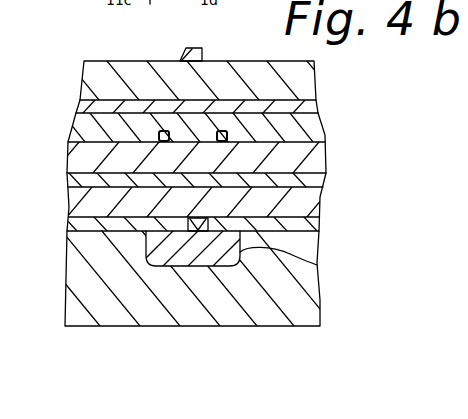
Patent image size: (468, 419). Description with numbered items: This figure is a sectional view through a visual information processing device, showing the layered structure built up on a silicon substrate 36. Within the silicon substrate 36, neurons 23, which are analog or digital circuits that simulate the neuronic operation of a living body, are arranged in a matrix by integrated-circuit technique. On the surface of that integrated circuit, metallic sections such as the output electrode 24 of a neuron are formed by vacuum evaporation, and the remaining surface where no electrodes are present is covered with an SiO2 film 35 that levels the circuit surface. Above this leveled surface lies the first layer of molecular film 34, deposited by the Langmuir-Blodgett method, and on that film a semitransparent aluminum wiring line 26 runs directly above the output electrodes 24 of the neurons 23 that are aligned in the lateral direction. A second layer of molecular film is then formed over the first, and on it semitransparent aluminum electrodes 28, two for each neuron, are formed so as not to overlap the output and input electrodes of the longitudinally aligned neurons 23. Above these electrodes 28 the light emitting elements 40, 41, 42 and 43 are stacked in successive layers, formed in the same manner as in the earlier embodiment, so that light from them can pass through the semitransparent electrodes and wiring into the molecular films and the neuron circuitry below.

The light emitting element 42 is at (315, 80).
The light emitting element 41 is at (316, 110).
The light emitting element 40 is at (325, 132).
The semitransparent aluminum electrode 28 is at (160, 131).
The light emitting element 43 is at (183, 50).
The first layer of molecular film 34 is at (67, 162).
The output electrode 24 is at (315, 202).
The semitransparent aluminum wiring line 26 is at (75, 182).
The SiO2 film 35 is at (316, 229).
The neuron 23 is at (317, 265).
The silicon substrate 36 is at (308, 304).